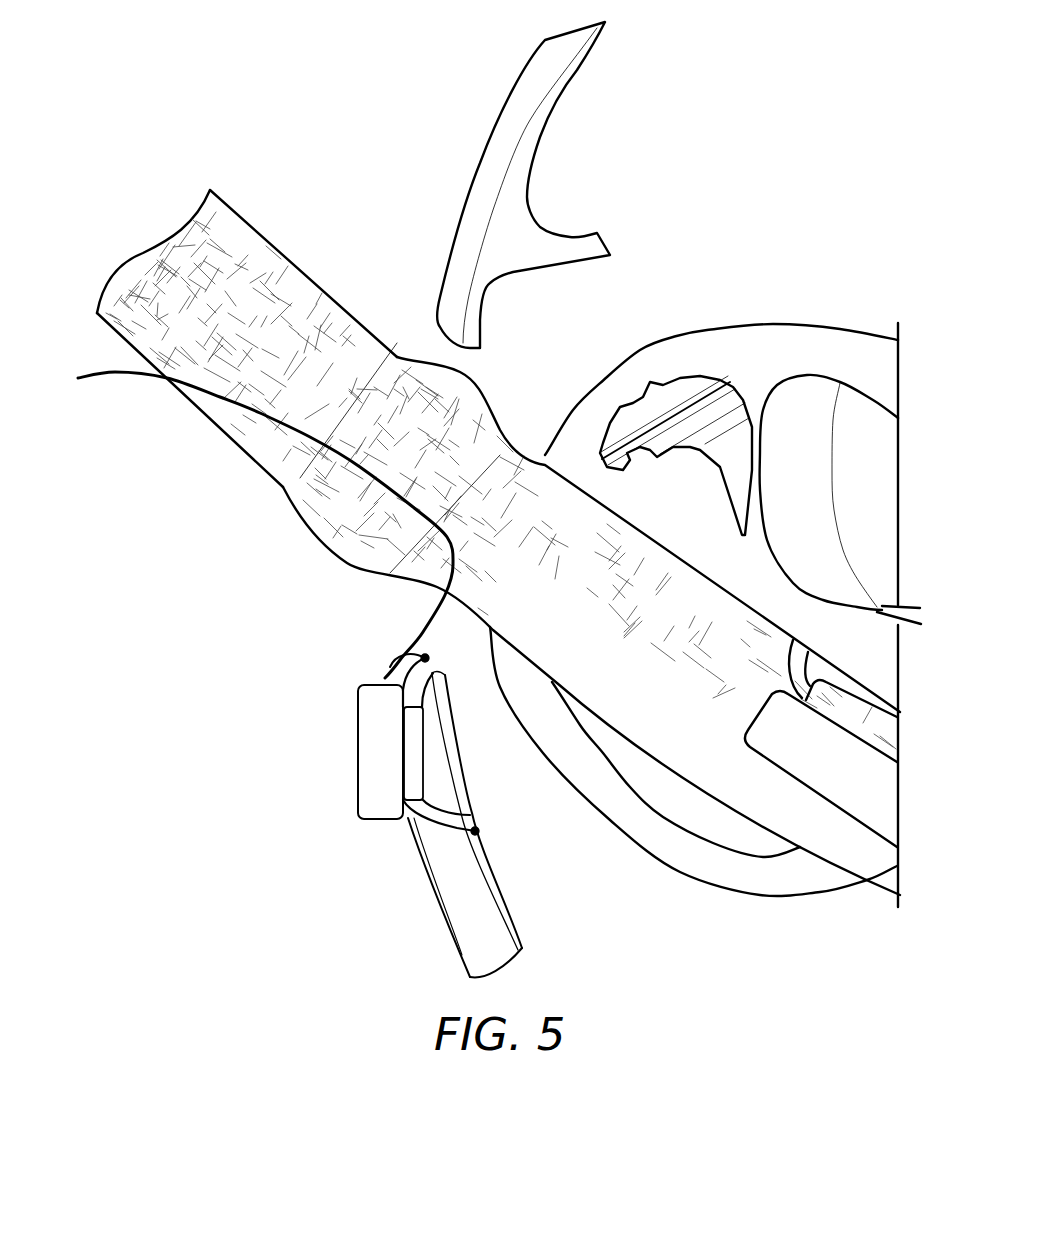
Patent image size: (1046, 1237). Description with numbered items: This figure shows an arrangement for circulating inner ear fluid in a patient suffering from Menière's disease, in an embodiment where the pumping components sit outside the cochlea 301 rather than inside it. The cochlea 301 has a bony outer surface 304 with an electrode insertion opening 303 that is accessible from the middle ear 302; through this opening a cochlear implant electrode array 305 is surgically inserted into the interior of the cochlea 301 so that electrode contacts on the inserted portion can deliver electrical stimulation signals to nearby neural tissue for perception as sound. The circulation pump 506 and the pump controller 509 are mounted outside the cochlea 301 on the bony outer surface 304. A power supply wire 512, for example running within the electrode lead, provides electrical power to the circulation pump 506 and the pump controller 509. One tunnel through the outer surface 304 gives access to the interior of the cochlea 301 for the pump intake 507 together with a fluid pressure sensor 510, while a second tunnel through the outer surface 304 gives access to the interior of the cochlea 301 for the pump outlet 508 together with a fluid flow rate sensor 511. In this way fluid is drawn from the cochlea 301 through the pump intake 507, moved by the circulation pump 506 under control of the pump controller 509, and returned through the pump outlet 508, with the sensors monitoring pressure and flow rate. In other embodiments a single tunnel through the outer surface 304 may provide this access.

The cochlea 301 is at (676, 191).
The middle ear 302 is at (301, 191).
The electrode insertion opening 303 is at (480, 387).
The outer surface 304 is at (478, 163).
The cochlear implant electrode array 305 is at (308, 274).
The circulation pump 506 is at (424, 752).
The pump intake 507 is at (435, 670).
The pump outlet 508 is at (475, 822).
The pump controller 509 is at (357, 785).
The fluid pressure sensor 510 is at (425, 654).
The fluid flow rate sensor 511 is at (478, 832).
The power supply wire 512 is at (200, 389).